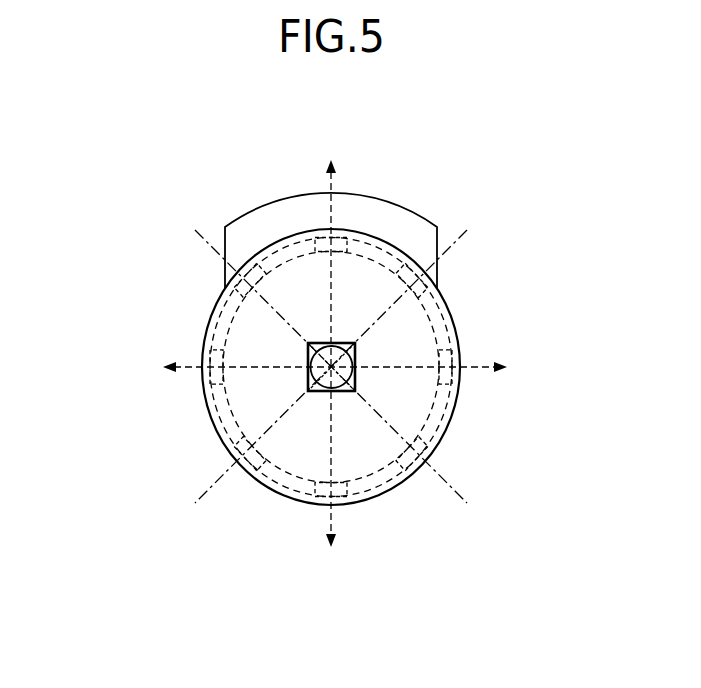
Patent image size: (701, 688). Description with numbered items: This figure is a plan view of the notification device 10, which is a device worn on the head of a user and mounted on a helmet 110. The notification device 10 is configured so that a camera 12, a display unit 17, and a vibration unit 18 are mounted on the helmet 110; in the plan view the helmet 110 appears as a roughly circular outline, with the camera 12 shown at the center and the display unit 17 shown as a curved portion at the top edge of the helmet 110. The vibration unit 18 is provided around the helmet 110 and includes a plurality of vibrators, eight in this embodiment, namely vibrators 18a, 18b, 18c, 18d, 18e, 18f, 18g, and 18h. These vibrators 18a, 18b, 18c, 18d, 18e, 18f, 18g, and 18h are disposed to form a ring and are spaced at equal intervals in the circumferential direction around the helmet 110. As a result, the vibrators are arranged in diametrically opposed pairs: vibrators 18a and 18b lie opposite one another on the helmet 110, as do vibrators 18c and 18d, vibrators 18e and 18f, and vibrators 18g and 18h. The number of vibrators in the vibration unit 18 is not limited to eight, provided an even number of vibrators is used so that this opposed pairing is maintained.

The notification device 10 is at (164, 271).
The camera 12 is at (336, 392).
The display unit 17 is at (388, 222).
The vibration unit 18 is at (205, 408).
The vibrator 18a is at (320, 237).
The vibrator 18b is at (322, 497).
The vibrator 18c is at (213, 365).
The vibrator 18d is at (448, 372).
The vibrator 18e is at (245, 277).
The vibrator 18f is at (425, 449).
The vibrator 18g is at (414, 281).
The vibrator 18h is at (240, 455).
The helmet 110 is at (412, 333).